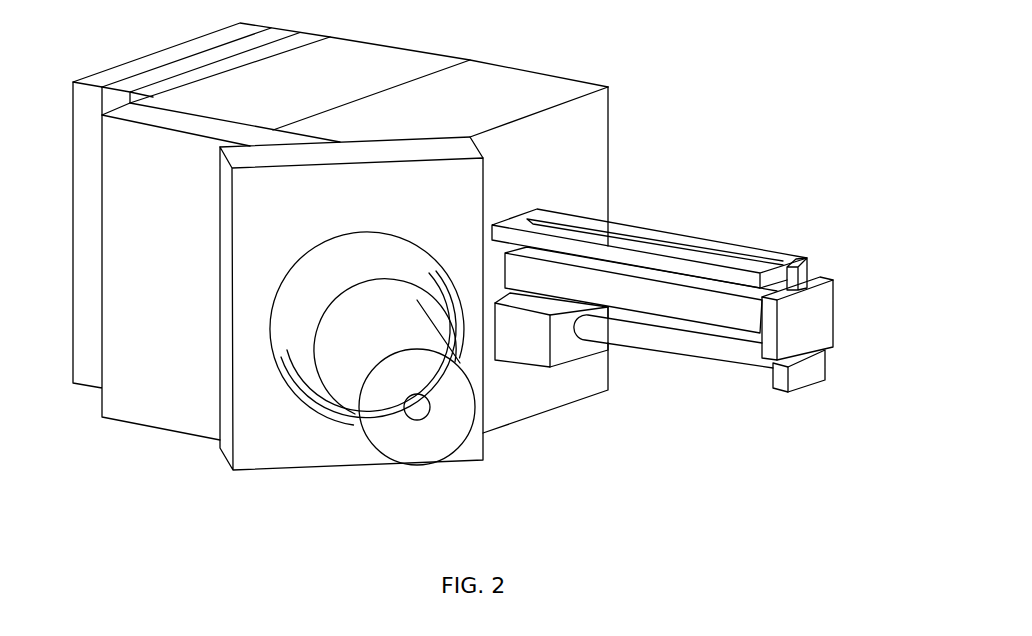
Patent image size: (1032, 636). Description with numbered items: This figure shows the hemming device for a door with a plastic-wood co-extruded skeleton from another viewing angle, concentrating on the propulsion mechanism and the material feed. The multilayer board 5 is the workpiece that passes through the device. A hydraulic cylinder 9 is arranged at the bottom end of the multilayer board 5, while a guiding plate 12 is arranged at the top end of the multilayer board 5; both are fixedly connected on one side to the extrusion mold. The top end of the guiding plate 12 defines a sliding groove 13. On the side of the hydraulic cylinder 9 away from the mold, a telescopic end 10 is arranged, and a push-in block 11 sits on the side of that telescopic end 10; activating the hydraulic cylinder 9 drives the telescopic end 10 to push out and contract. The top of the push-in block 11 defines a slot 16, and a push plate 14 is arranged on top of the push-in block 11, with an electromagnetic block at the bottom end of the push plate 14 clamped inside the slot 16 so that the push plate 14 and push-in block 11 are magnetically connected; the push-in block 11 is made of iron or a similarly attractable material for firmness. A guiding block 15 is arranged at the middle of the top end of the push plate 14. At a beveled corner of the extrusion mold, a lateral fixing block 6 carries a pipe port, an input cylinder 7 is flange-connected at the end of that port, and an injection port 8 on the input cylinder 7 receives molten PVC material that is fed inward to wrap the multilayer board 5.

The multilayer board 5 is at (672, 302).
The lateral fixing block 6 is at (288, 442).
The input cylinder 7 is at (368, 360).
The injection port 8 is at (420, 410).
The hydraulic cylinder 9 is at (535, 343).
The telescopic end 10 is at (642, 332).
The push-in block 11 is at (803, 377).
The guiding plate 12 is at (773, 257).
The sliding groove 13 is at (665, 243).
The push plate 14 is at (817, 320).
The guiding block 15 is at (792, 272).
The slot 16 is at (777, 388).